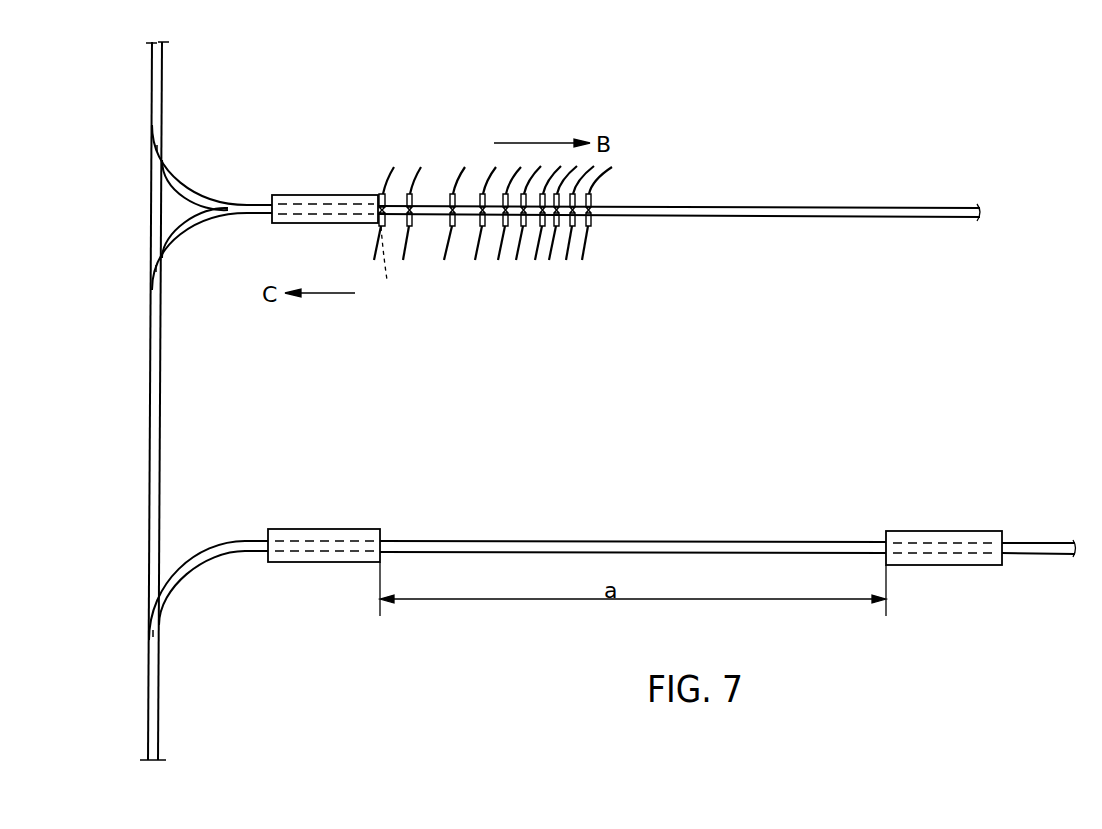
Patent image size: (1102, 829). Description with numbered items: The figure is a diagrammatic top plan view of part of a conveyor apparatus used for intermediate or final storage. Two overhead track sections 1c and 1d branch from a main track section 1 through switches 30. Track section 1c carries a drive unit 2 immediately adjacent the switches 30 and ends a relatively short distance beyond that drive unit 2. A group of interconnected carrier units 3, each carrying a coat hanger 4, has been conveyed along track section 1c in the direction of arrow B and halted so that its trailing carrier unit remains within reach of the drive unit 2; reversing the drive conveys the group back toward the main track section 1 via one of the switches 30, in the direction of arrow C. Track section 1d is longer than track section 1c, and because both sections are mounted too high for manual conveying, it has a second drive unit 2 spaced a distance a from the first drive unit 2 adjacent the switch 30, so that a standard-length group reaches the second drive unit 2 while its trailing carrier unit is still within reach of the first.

The main track section 1 is at (150, 321).
The track section 1c is at (828, 207).
The track section 1d is at (585, 543).
The drive unit 2 is at (330, 193).
The carrier unit 3 is at (452, 228).
The coat hanger 4 is at (495, 253).
The switch 30 is at (197, 192).